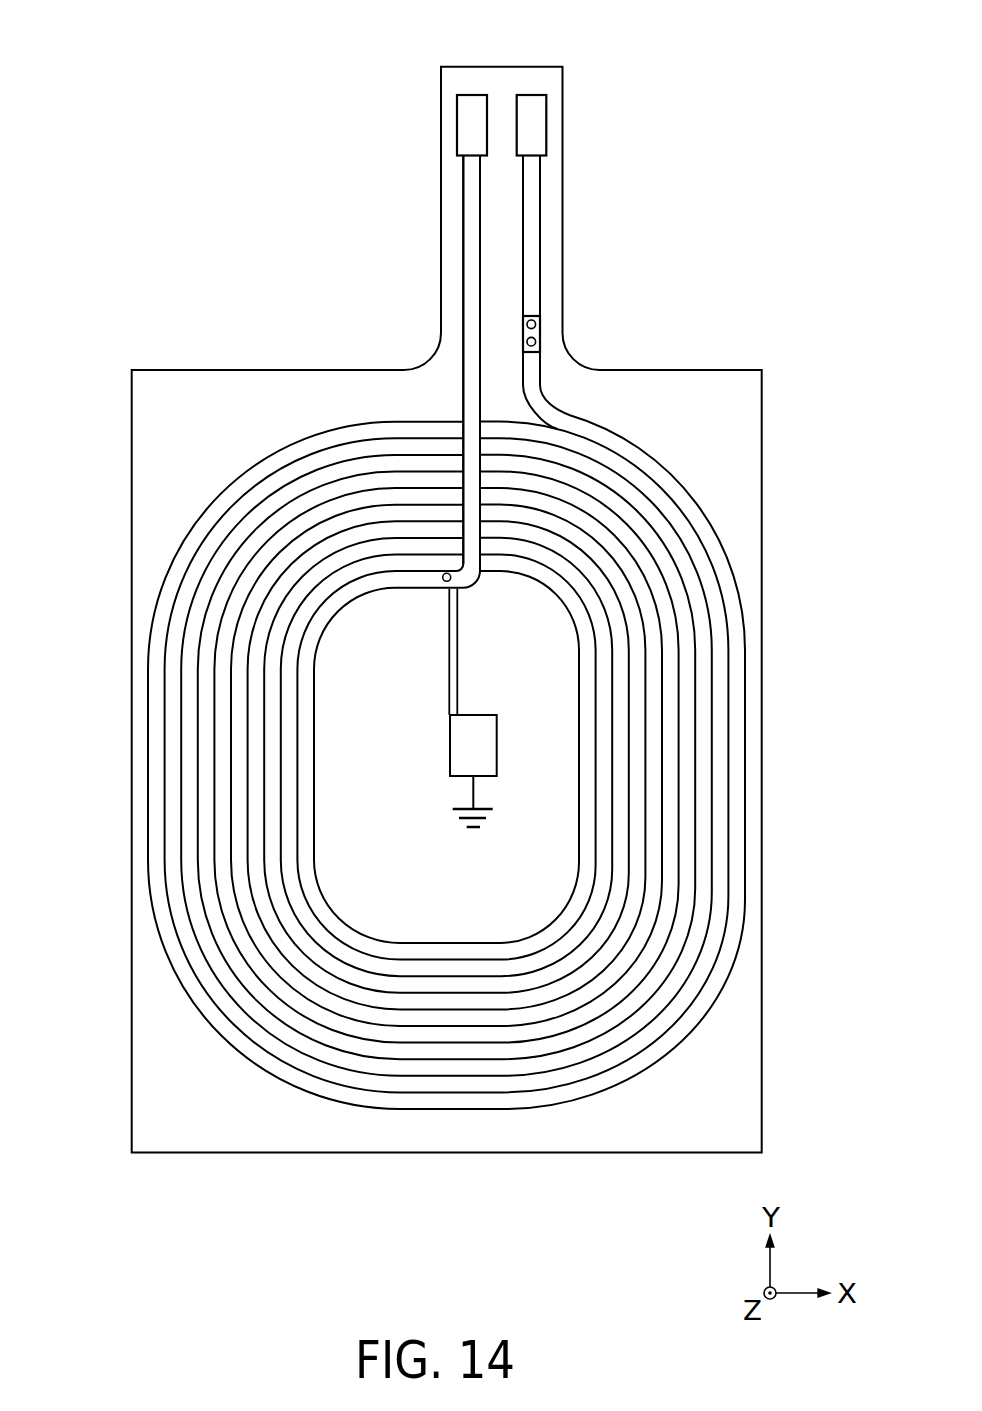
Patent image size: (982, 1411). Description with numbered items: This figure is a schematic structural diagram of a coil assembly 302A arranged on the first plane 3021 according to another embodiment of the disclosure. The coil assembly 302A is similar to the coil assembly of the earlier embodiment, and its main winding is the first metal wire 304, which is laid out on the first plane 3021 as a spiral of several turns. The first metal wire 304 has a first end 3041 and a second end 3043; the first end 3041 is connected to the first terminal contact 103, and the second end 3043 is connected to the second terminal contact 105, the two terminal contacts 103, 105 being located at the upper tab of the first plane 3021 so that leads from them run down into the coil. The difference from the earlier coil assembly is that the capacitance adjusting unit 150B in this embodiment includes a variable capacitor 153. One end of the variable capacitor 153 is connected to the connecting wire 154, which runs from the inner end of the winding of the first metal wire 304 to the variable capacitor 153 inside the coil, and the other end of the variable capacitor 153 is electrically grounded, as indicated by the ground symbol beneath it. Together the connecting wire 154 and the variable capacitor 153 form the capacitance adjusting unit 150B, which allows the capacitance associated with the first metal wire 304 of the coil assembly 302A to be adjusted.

The coil assembly 302A is at (82, 33).
The first terminal contact 103 is at (462, 123).
The second terminal contact 105 is at (540, 123).
The first end 3041 is at (470, 217).
The second end 3043 is at (533, 217).
The first metal wire 304 is at (734, 560).
The first plane 3021 is at (748, 1080).
The connecting wire 154 is at (455, 675).
The variable capacitor 153 is at (460, 743).
The capacitance adjusting unit 150B is at (421, 723).